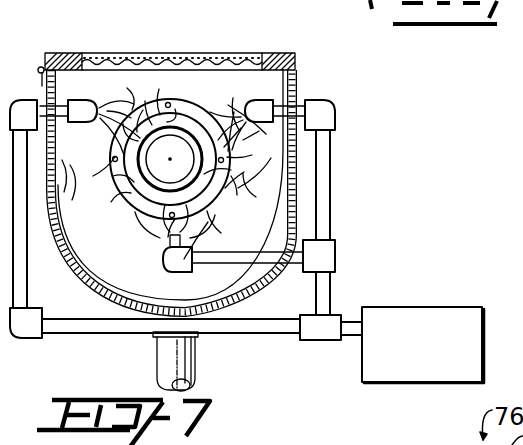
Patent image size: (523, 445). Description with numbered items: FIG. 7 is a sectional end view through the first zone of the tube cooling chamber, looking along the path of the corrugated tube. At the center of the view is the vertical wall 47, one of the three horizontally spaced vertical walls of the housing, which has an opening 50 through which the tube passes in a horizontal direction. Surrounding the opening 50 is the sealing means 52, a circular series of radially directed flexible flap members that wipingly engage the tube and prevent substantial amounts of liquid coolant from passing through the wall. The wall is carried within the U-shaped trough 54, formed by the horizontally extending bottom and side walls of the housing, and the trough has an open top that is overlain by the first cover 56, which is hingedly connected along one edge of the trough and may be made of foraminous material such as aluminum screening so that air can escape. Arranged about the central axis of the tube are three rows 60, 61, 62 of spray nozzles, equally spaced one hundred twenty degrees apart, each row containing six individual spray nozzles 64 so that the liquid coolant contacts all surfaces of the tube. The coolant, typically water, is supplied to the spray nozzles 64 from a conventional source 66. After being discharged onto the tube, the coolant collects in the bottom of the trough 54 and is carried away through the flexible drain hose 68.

The vertical wall 47 is at (272, 201).
The opening 50 is at (118, 195).
The sealing means 52 is at (173, 82).
The U-shaped trough 54 is at (97, 283).
The first cover 56 is at (205, 53).
The row of spray nozzles 60 is at (99, 100).
The row of spray nozzles 61 is at (271, 100).
The row of spray nozzles 62 is at (169, 274).
The spray nozzle 64 is at (240, 117).
The source 66 is at (441, 307).
The flexible drain hose 68 is at (192, 362).